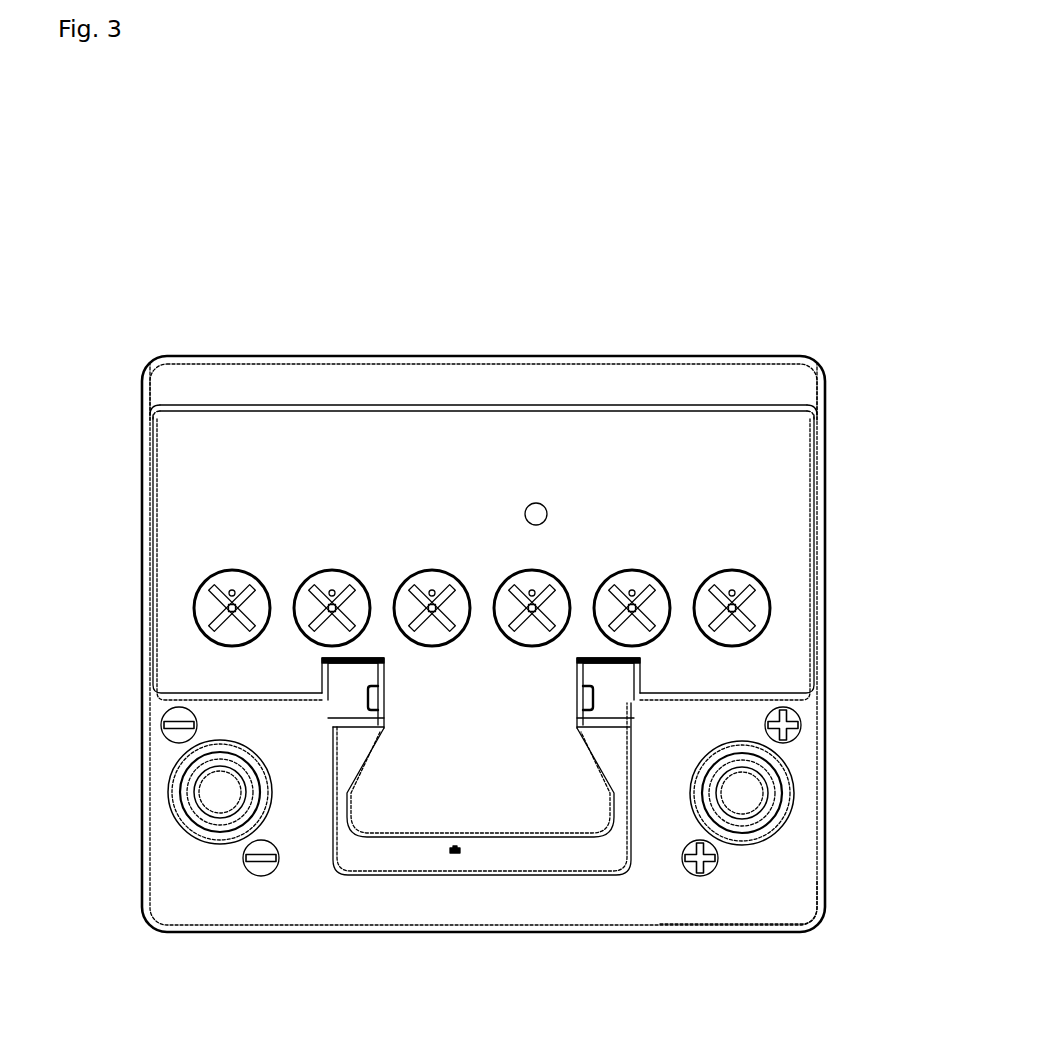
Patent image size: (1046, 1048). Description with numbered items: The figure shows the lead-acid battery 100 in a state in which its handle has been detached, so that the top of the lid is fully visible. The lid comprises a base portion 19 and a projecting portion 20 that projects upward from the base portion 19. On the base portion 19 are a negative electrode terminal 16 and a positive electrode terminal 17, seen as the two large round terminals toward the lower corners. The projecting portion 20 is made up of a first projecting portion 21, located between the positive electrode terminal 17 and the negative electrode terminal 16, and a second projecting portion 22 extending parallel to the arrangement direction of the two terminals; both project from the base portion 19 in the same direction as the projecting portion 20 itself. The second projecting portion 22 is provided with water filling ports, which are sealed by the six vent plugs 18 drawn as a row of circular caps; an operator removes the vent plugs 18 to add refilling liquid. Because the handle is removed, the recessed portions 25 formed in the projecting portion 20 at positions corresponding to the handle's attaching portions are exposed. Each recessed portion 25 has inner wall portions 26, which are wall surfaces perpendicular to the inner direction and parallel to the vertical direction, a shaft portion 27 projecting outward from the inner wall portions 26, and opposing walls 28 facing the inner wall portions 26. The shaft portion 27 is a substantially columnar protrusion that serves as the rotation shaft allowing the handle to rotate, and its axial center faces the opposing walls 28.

The lead-acid battery 100 is at (620, 269).
The projecting portion 20 is at (827, 470).
The second projecting portion 22 is at (770, 550).
The vent plugs 18 is at (331, 580).
The negative electrode terminal 16 is at (217, 805).
The positive electrode terminal 17 is at (745, 800).
The opposing walls 28 is at (183, 712).
The inner wall portions 26 is at (378, 673).
The shaft portion 27 is at (340, 705).
The recessed portions 25 is at (623, 703).
The first projecting portion 21 is at (393, 805).
The base portion 19 is at (750, 893).